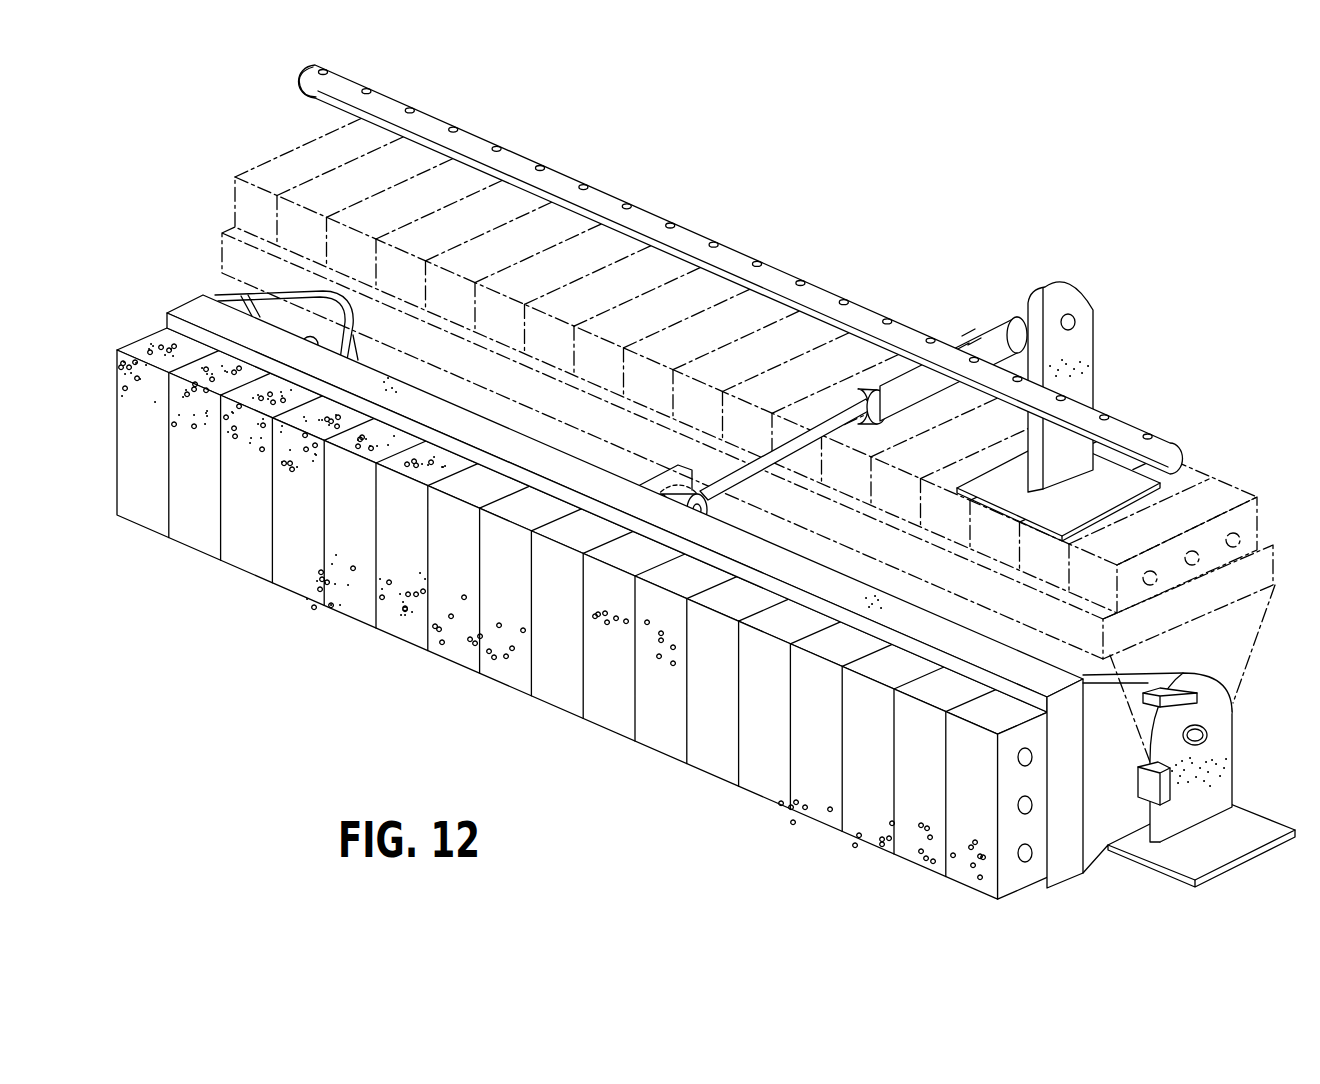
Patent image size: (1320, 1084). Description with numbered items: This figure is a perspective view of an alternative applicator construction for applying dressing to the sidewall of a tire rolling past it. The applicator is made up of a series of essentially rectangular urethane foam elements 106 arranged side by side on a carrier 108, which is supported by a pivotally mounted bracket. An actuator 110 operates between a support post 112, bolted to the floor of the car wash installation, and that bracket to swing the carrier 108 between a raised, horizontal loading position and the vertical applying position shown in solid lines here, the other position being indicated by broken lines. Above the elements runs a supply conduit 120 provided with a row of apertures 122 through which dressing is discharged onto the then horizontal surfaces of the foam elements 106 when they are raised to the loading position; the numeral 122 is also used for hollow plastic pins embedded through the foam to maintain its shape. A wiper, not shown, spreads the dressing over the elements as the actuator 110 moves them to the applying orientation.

The urethane foam elements 106 is at (872, 822).
The carrier 108 is at (1067, 864).
The actuator 110 is at (983, 330).
The support post 112 is at (1097, 340).
The supply conduit 120 is at (741, 269).
The apertures 122 is at (673, 143).